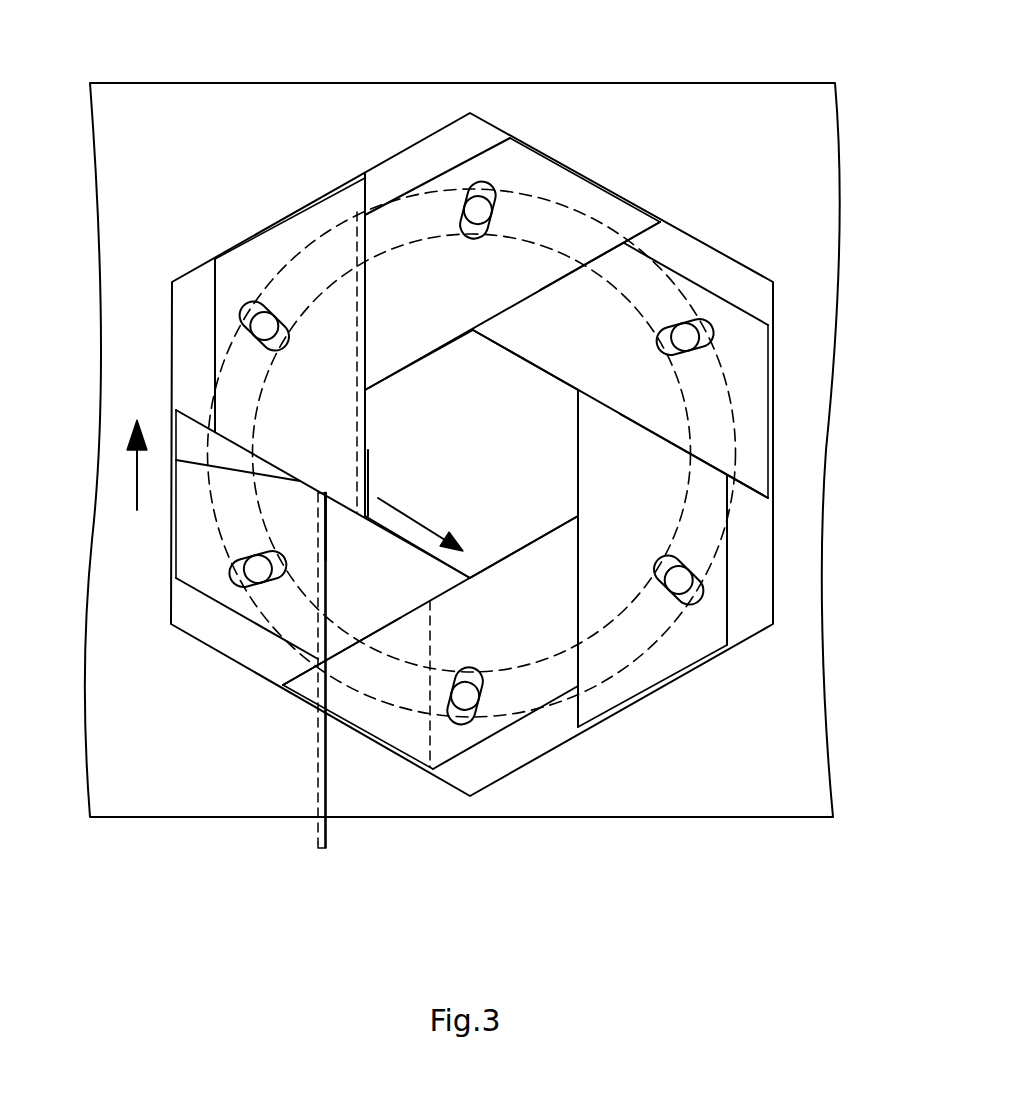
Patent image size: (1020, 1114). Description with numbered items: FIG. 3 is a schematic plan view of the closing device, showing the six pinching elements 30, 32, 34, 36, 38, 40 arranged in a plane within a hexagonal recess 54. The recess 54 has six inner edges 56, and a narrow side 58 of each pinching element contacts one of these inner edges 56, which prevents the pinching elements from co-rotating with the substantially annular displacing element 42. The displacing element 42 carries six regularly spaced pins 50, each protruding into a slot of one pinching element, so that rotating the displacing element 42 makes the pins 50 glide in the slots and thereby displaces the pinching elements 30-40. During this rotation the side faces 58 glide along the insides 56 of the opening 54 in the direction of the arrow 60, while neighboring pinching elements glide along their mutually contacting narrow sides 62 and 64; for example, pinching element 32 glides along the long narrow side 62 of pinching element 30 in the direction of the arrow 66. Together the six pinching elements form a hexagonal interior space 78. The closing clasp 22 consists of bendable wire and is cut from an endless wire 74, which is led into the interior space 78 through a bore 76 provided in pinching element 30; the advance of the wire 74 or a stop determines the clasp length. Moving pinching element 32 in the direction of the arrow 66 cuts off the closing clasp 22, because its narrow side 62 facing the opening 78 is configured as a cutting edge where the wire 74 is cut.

The closing clasp 22 is at (471, 454).
The pinching element 30 is at (190, 555).
The pinching element 32 is at (260, 264).
The pinching element 34 is at (548, 184).
The pinching element 36 is at (745, 386).
The pinching element 38 is at (675, 652).
The pinching element 40 is at (395, 723).
The displacing element 42 is at (643, 292).
The pin 50 is at (262, 326).
The hexagonal recess 54 is at (190, 380).
The inner edge 56 is at (172, 338).
The narrow side 58 is at (285, 214).
The arrow 60 is at (135, 475).
The long narrow side 62 is at (577, 428).
The narrow side 64 is at (363, 333).
The arrow 66 is at (442, 493).
The wire 74 is at (269, 690).
The bore 76 is at (325, 527).
The hexagonal interior space 78 is at (468, 473).